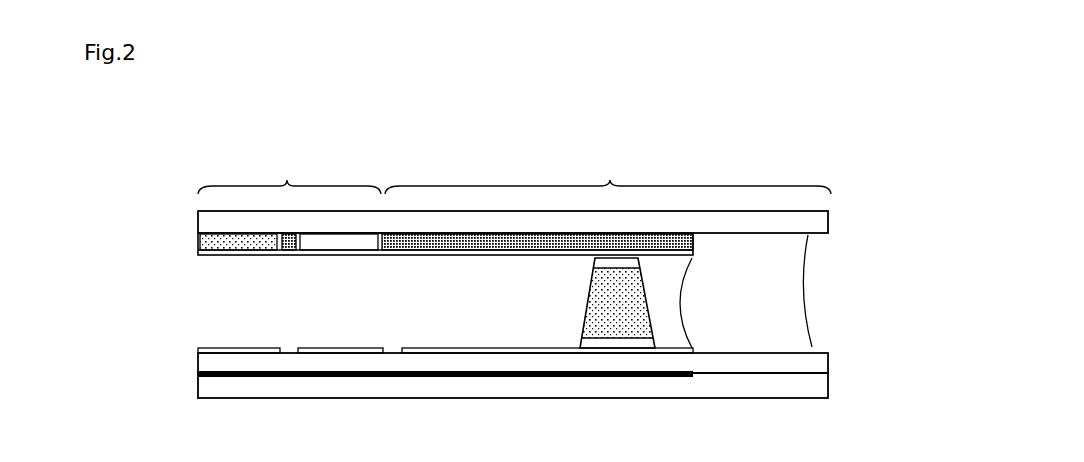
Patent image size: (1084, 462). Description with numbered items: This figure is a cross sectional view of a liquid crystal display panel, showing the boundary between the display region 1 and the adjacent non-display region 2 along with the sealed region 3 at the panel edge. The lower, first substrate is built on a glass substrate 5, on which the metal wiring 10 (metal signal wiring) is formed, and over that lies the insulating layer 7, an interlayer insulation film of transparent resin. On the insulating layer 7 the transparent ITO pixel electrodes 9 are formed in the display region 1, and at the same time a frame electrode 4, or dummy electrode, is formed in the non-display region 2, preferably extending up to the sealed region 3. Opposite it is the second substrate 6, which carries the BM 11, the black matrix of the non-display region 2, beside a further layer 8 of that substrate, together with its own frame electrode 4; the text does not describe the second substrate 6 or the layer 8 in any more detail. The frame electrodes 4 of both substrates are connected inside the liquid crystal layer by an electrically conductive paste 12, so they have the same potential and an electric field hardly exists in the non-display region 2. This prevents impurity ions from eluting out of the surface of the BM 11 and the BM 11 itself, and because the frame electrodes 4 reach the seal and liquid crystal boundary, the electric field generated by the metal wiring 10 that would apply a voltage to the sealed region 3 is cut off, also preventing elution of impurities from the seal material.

The display region 1 is at (287, 180).
The non-display region 2 is at (610, 180).
The sealed region 3 is at (790, 307).
The frame electrode 4 is at (387, 262).
The glass substrate 5 is at (815, 392).
The upper substrate 6 is at (815, 218).
The insulating layer 7 is at (812, 362).
The color filter layer 8 is at (200, 253).
The pixel electrodes 9 is at (200, 350).
The metal wiring 10 is at (550, 377).
The BM 11 is at (692, 247).
The electrically conductive paste 12 is at (590, 328).